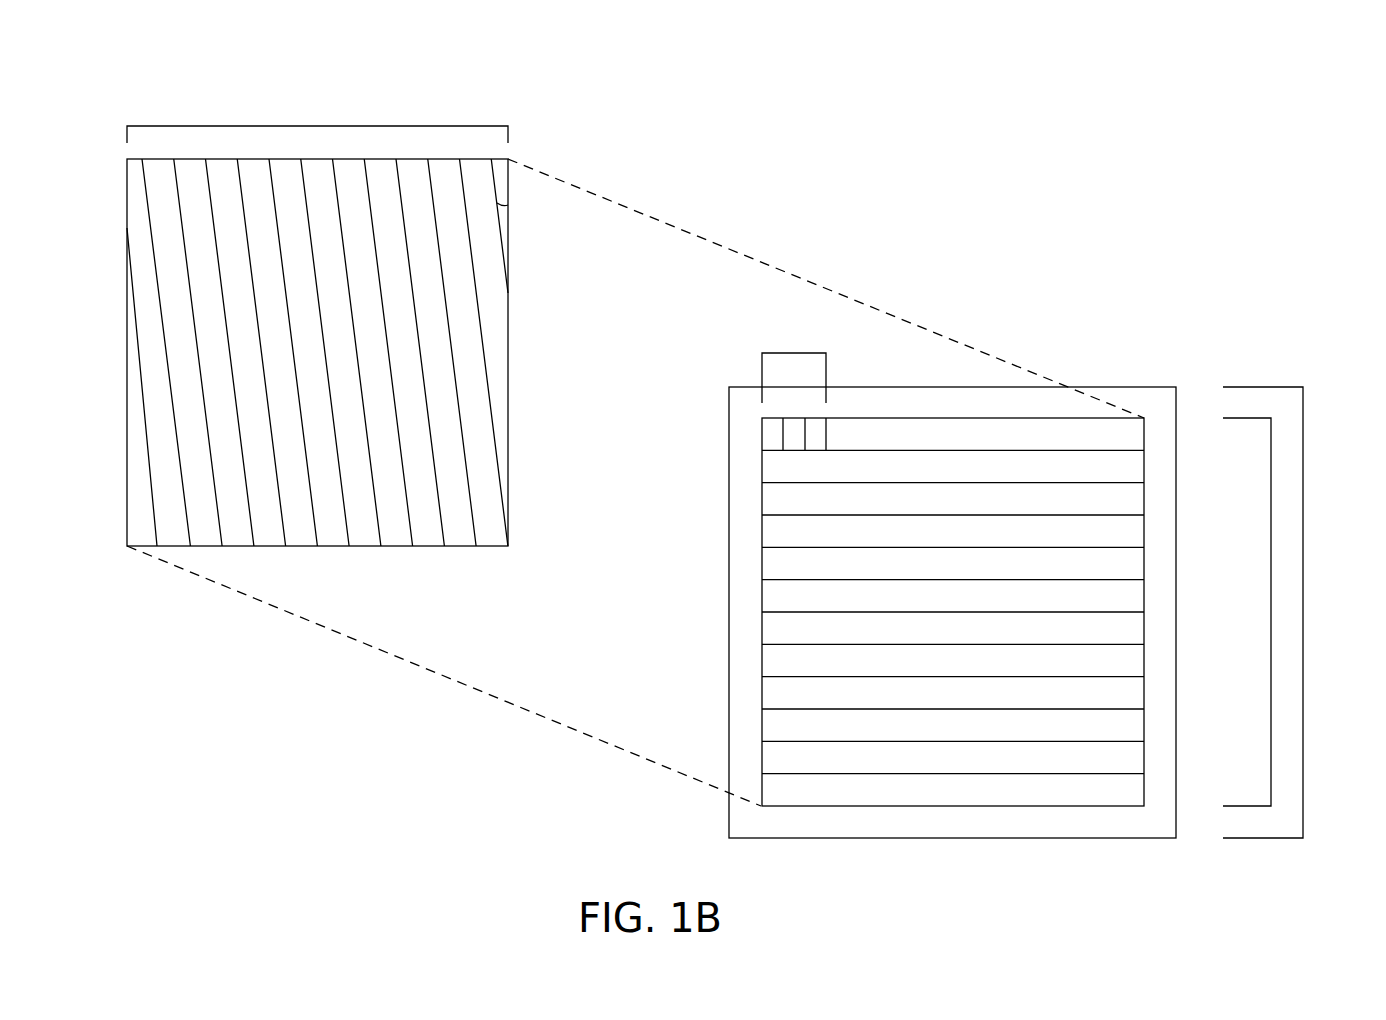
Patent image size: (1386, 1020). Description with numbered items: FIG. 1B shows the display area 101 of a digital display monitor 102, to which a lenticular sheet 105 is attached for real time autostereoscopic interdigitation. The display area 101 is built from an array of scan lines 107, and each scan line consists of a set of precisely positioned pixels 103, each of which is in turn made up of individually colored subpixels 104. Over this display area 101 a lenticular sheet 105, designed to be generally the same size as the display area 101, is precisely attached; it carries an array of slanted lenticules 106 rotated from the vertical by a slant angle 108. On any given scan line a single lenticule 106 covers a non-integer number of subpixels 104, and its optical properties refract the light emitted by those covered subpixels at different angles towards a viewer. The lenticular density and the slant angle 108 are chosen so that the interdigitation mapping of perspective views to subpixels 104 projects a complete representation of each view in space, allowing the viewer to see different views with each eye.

The display area 101 is at (1271, 483).
The digital display monitor 102 is at (1303, 676).
The pixels 103 is at (795, 353).
The subpixels 104 is at (817, 435).
The lenticular sheet 105 is at (317, 126).
The slanted lenticules 106 is at (412, 159).
The scan lines 107 is at (1144, 433).
The slant angle Φ 108 is at (502, 202).